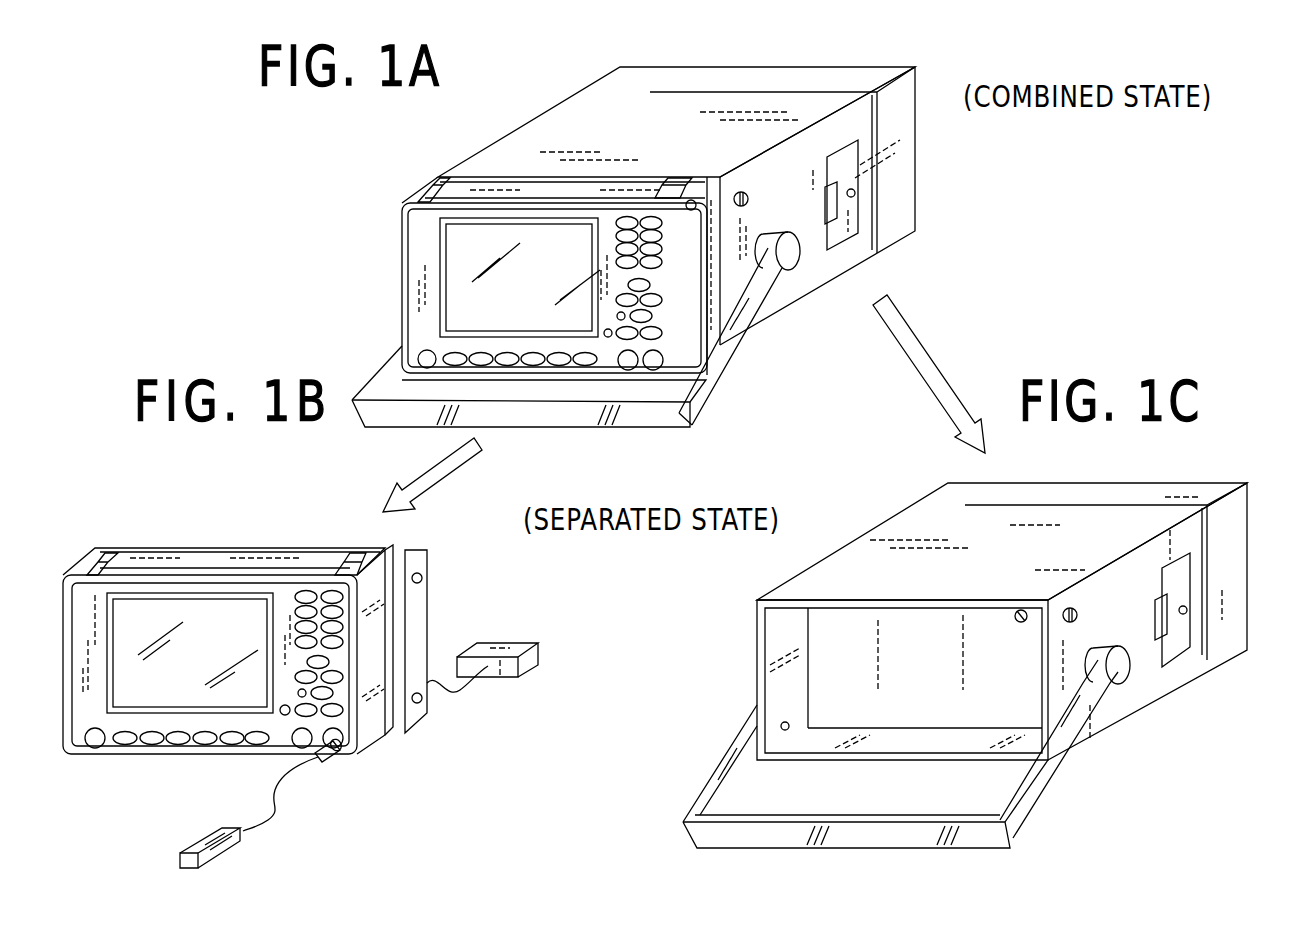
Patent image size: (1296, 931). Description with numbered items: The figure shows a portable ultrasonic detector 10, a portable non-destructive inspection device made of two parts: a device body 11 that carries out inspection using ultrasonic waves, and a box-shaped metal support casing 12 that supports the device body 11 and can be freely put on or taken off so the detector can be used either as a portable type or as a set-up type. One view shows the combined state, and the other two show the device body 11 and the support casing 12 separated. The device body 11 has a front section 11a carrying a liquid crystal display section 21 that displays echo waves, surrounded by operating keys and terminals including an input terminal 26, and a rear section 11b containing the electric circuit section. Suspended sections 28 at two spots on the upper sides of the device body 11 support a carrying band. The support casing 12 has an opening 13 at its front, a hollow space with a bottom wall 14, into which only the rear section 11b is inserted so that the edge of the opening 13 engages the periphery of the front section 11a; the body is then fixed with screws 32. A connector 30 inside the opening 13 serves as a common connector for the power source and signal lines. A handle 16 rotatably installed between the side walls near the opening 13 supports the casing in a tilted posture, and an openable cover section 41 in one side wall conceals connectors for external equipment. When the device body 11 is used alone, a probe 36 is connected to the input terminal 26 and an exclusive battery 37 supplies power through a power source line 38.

In FIG. 1A, the portable ultrasonic detector 10 is at (311, 161).
In FIG. 1A, the device body 11 is at (503, 275).
In FIG. 1B, the device body 11 is at (228, 606).
In FIG. 1B, the front section 11a is at (80, 594).
In FIG. 1B, the rear section 11b is at (457, 641).
In FIG. 1A, the support casing 12 is at (676, 221).
In FIG. 1C, the support casing 12 is at (1002, 609).
In FIG. 1C, the opening 13 is at (829, 669).
In FIG. 1C, the bottom wall 14 is at (925, 765).
In FIG. 1A, the handle 16 is at (576, 329).
In FIG. 1C, the handle 16 is at (906, 747).
In FIG. 1A, the display section 21 is at (468, 277).
In FIG. 1B, the display section 21 is at (190, 702).
In FIG. 1B, the input terminal 26 is at (356, 785).
In FIG. 1A, the suspended sections 28 is at (553, 165).
In FIG. 1B, the suspended sections 28 is at (229, 529).
In FIG. 1C, the connector 30 is at (996, 648).
In FIG. 1A, the screws 32 is at (771, 193).
In FIG. 1C, the screws 32 is at (1102, 602).
In FIG. 1B, the probe 36 is at (249, 814).
In FIG. 1B, the battery 37 is at (508, 629).
In FIG. 1B, the power source line 38 is at (457, 711).
In FIG. 1A, the cover section 41 is at (843, 237).
In FIG. 1C, the cover section 41 is at (1180, 651).